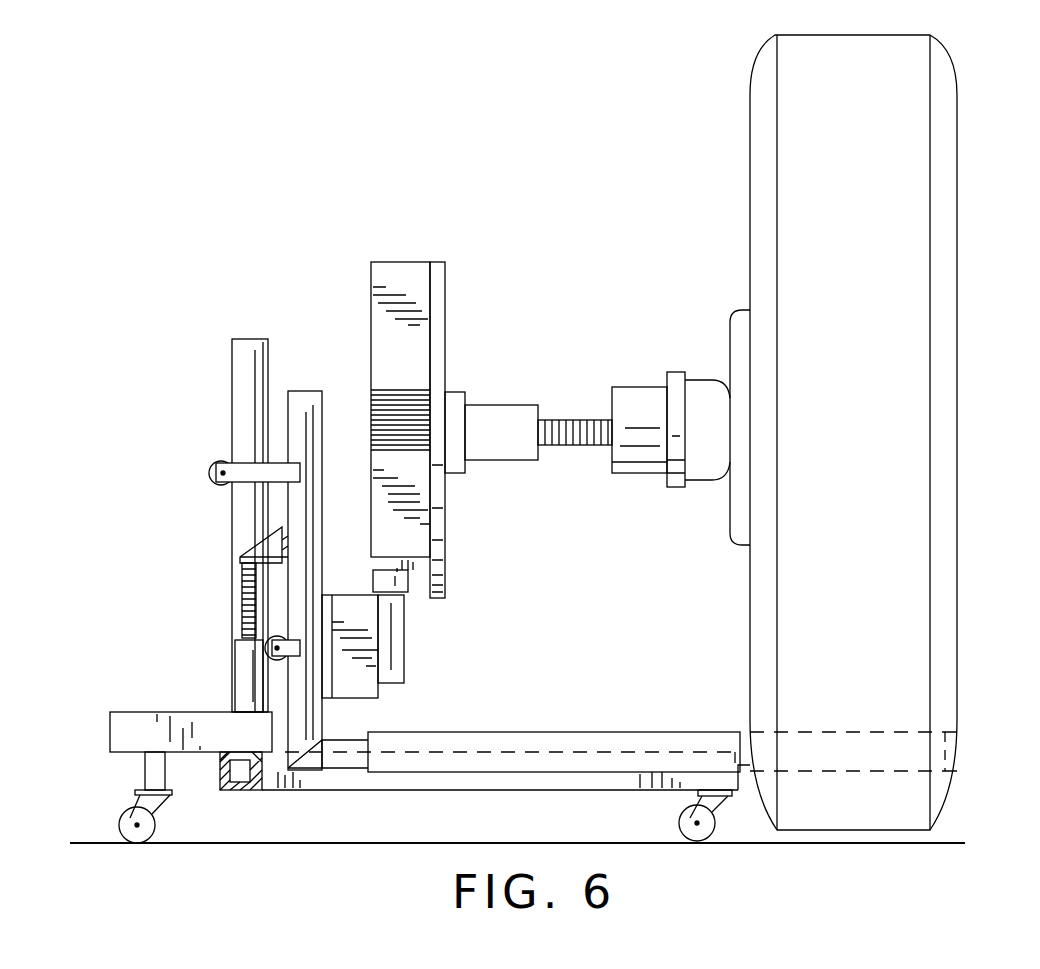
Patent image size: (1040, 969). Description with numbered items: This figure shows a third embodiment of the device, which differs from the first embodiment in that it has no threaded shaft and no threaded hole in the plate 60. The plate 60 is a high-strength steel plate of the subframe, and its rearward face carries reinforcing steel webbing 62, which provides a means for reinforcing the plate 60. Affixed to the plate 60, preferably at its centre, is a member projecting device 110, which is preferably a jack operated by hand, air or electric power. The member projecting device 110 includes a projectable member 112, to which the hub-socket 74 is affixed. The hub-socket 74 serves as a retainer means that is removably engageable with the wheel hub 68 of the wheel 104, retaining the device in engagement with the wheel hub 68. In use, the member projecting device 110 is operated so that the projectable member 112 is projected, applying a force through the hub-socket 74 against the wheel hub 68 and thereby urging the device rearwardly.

The reinforcing steel webbing 62 is at (372, 262).
The plate 60 is at (445, 262).
The member projecting device 110 is at (493, 405).
The projectable member 112 is at (566, 445).
The hub-socket 74 is at (632, 387).
The wheel hub 68 is at (707, 372).
The wheel 104 is at (957, 226).